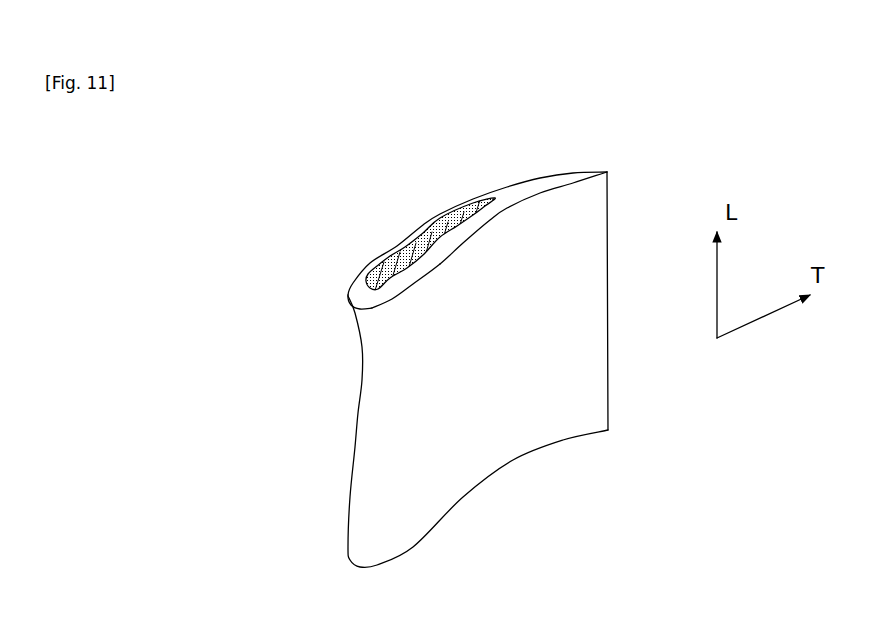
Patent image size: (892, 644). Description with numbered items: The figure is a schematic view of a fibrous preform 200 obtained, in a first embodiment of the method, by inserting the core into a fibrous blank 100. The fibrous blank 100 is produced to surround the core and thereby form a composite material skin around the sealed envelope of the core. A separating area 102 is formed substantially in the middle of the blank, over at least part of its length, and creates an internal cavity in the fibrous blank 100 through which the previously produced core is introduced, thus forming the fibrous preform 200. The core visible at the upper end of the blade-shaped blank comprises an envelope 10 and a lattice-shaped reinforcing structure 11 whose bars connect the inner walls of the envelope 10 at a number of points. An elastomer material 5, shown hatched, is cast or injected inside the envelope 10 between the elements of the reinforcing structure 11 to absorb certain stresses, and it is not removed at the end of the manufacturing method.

The elastomer material 5 is at (393, 250).
The envelope 10 is at (419, 228).
The reinforcing structure 11 is at (393, 290).
The fibrous blank 100 is at (585, 225).
The separating area 102 is at (372, 276).
The fibrous preform 200 is at (296, 511).